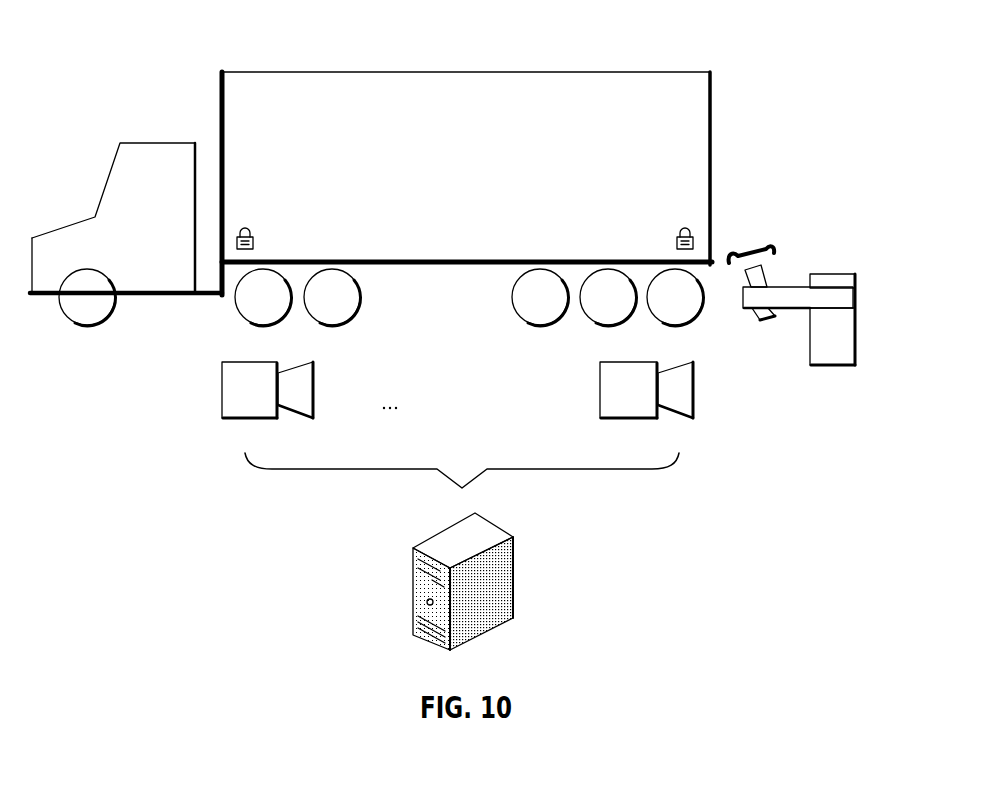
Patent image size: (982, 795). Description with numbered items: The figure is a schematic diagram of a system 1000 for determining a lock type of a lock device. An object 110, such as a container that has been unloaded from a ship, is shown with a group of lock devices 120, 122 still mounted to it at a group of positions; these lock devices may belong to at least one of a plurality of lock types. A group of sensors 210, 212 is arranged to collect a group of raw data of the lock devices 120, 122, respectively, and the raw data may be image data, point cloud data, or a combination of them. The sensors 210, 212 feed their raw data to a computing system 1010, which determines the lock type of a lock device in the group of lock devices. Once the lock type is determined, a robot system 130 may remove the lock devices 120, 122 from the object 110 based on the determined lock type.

The system 1000 is at (172, 22).
The object 110 is at (633, 72).
The lock device 120 is at (255, 232).
The lock device 122 is at (695, 233).
The robot system 130 is at (832, 274).
The sensor 210 is at (260, 362).
The sensor 212 is at (637, 362).
The computing system 1010 is at (497, 526).